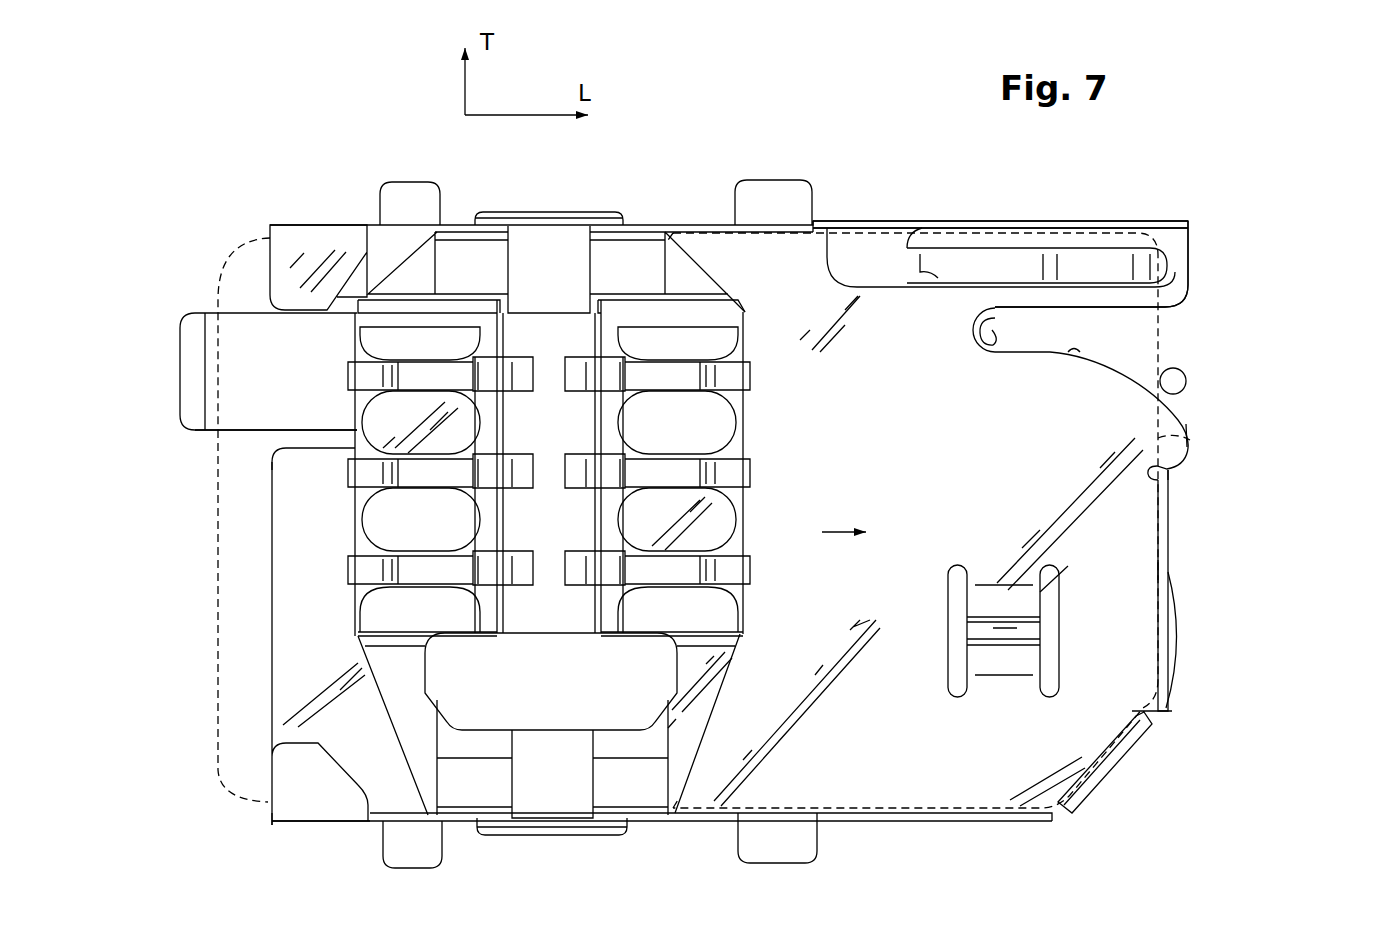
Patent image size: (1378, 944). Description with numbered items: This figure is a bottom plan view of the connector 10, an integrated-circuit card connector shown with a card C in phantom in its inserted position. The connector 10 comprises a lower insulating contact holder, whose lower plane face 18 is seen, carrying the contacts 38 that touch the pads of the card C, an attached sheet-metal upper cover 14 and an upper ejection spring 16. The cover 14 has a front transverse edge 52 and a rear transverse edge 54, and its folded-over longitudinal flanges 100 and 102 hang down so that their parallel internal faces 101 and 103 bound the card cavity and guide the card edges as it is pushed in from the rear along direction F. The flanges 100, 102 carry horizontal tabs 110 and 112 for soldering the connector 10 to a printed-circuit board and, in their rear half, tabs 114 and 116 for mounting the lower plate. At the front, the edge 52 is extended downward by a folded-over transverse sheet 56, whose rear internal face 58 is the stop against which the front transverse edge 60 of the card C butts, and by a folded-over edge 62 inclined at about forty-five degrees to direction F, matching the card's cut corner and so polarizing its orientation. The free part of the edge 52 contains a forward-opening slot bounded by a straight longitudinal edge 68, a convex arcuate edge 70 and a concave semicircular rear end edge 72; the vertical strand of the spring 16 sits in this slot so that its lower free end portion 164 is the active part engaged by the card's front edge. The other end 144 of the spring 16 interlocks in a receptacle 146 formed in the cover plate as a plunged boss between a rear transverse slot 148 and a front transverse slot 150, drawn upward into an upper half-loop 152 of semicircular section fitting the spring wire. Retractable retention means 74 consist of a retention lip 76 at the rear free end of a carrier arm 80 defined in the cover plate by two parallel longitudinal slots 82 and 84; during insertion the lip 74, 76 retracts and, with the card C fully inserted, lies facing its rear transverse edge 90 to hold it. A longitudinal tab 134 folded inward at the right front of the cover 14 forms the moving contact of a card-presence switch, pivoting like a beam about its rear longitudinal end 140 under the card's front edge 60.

The connector 10 is at (1286, 258).
The upper cover 14 is at (1184, 462).
The ejection spring 16 is at (1199, 391).
The lower plane face 18 is at (718, 412).
The contacts 38 is at (506, 357).
The front transverse edge 52 is at (1192, 250).
The rear transverse edge 54 is at (268, 680).
The front transverse sheet 56 is at (1173, 550).
The rear internal face 58 is at (1158, 568).
The front transverse edge of the card 60 is at (1190, 440).
The folded-over edge 62 is at (1129, 762).
The straight longitudinal edge 68 is at (1048, 309).
The convex arcuate longitudinal edge 70 is at (1076, 348).
The transverse rear end edge 72 is at (980, 347).
The retractable retention means 74 is at (182, 440).
The retention lip 76 is at (210, 348).
The carrier arm 80 is at (270, 380).
The longitudinal slot 82 is at (343, 300).
The longitudinal slot 84 is at (327, 432).
The rear transverse edge of the card 90 is at (217, 575).
The longitudinal lateral flange 100 is at (860, 828).
The internal face 101 is at (835, 812).
The longitudinal lateral flange 102 is at (884, 220).
The internal face 103 is at (875, 240).
The horizontal tab 110 is at (408, 847).
The horizontal tab 112 is at (408, 205).
The mounting tab 114 is at (537, 840).
The mounting tab 116 is at (553, 210).
The longitudinal tab 134 is at (1093, 258).
The rear longitudinal end 140 is at (938, 278).
The spring end 144 is at (988, 646).
The receptacle 146 is at (997, 605).
The rear transverse slot 148 is at (966, 680).
The front transverse slot 150 is at (1050, 672).
The upper half-loop 152 is at (998, 658).
The lower free end portion 164 is at (1186, 377).
The card C is at (1165, 334).
The insertion direction F is at (839, 517).